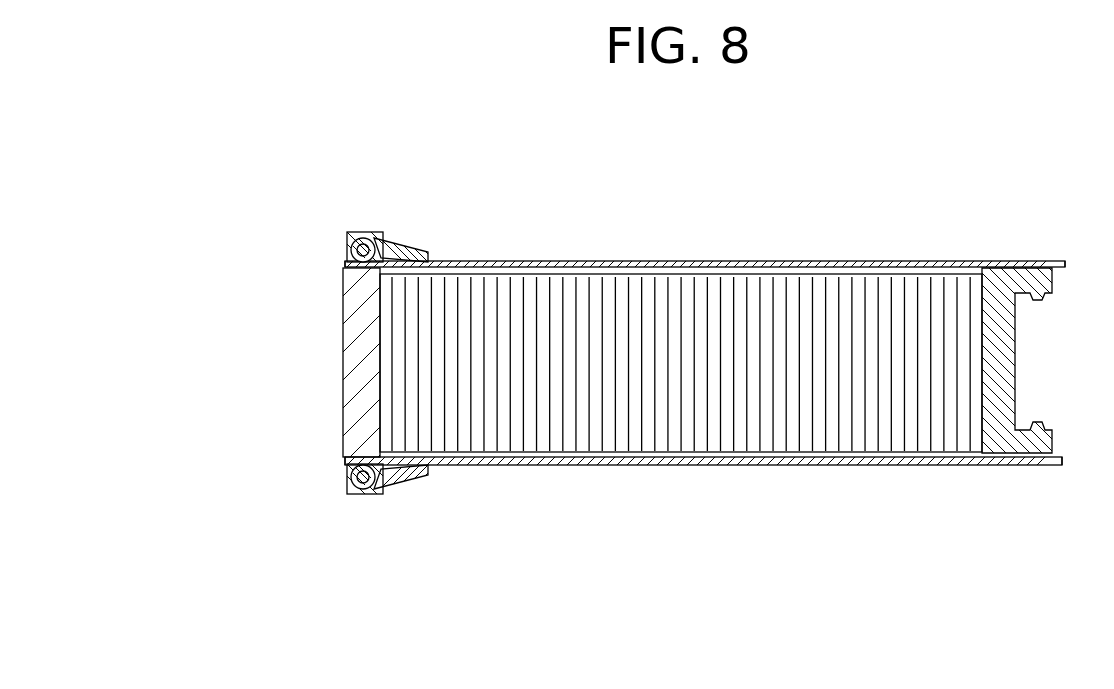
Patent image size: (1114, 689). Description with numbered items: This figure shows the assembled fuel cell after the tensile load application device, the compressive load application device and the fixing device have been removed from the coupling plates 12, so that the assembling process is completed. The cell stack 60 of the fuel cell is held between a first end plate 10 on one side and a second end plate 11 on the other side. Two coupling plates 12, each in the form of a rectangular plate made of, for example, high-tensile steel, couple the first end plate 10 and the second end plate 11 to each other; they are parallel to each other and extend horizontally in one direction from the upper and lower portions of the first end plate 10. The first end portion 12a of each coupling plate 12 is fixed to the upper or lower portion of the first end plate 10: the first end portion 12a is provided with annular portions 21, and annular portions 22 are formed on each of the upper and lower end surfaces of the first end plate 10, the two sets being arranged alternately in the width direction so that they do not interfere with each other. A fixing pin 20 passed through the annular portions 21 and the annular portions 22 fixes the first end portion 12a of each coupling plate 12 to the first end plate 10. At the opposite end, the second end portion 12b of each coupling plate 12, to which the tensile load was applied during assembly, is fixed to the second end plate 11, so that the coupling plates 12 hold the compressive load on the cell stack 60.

The first end plate 10 is at (368, 362).
The second end plate 11 is at (1012, 362).
The coupling plate 12 is at (689, 259).
The first end portion 12a is at (347, 234).
The second end portion 12b is at (1056, 259).
The fixing pin 20 is at (347, 241).
The annular portion 21 is at (398, 238).
The annular portion 22 is at (380, 233).
The cell stack 60 is at (850, 428).